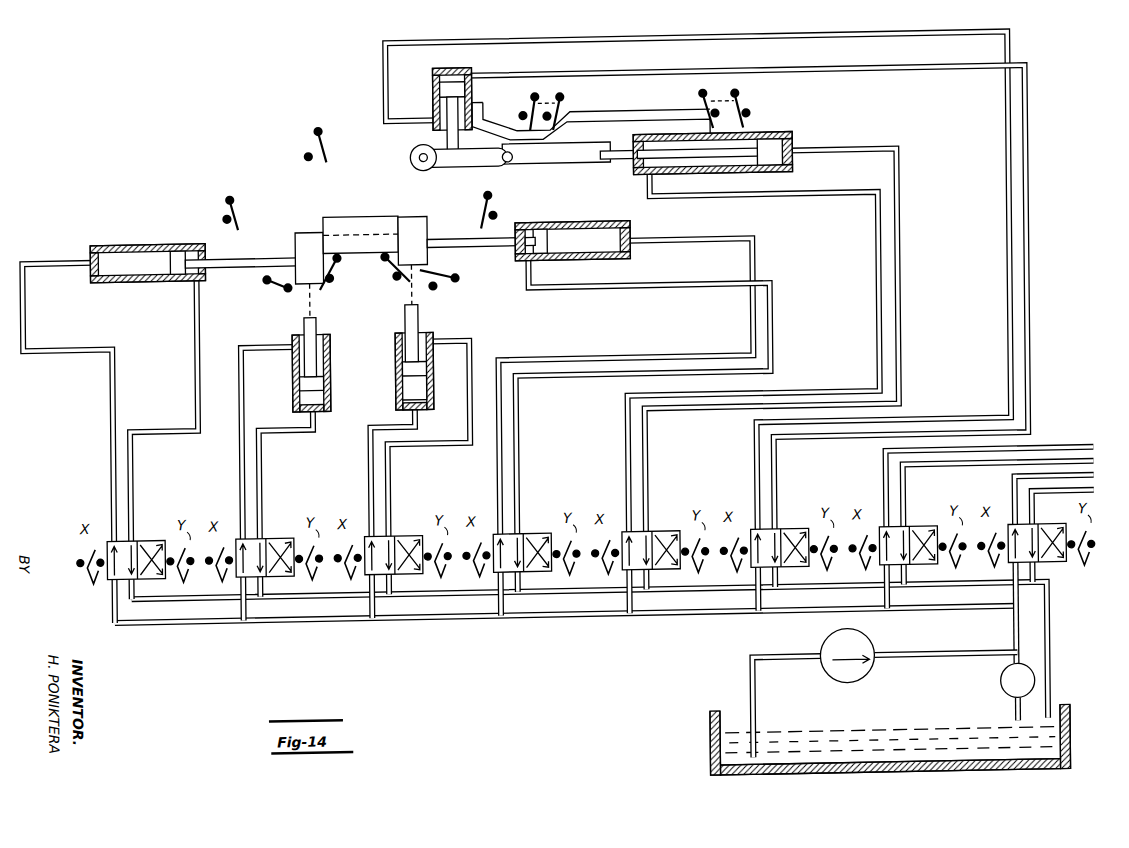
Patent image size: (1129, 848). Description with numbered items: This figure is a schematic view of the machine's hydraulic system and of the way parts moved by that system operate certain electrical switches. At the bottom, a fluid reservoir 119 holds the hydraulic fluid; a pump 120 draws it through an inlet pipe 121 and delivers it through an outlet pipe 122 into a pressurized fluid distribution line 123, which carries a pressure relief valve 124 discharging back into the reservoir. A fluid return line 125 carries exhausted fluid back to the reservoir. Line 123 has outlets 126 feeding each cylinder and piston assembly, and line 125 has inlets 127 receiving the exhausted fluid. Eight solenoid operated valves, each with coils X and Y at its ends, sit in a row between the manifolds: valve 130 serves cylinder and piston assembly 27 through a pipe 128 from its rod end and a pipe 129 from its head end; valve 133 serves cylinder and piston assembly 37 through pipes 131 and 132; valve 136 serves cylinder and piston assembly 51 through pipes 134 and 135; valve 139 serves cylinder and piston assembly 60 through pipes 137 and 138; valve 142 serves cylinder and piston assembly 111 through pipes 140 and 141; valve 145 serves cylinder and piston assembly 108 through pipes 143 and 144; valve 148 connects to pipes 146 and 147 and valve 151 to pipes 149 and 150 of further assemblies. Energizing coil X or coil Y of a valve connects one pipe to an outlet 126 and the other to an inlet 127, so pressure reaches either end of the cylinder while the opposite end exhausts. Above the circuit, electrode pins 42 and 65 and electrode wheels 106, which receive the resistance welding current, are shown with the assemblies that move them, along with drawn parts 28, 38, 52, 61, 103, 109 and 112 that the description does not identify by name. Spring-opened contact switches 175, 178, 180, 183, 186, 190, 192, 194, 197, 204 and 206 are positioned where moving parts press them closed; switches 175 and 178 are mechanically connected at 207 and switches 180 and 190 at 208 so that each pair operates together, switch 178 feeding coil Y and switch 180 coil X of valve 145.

The cylinder and piston assembly 27 is at (331, 361).
The piston rod 28 is at (304, 321).
The cylinder and piston assembly 37 is at (131, 237).
The piston rod 38 is at (248, 251).
The electrode pin 42 is at (344, 225).
The cylinder and piston assembly 51 is at (394, 375).
The piston rod 52 is at (421, 318).
The cylinder and piston assembly 60 is at (586, 223).
The piston rod 61 is at (464, 236).
The electrode pin 65 is at (388, 212).
The link 103 is at (486, 166).
The electrode wheels 106 is at (414, 161).
The cylinder and piston assembly 108 is at (445, 70).
The bracket 109 is at (448, 139).
The cylinder and piston assembly 111 is at (779, 137).
The piston rod 112 is at (617, 166).
The fluid reservoir 119 is at (708, 746).
The pump 120 is at (863, 648).
The inlet pipe 121 is at (748, 679).
The outlet pipe 122 is at (956, 656).
The pressurized fluid distribution line 123 is at (324, 622).
The pressure relief valve 124 is at (998, 694).
The fluid return line 125 is at (197, 588).
The outlets 126 is at (519, 593).
The inlets 127 is at (602, 577).
The pipe 128 is at (238, 445).
The pipe 129 is at (261, 440).
The valve 130 is at (262, 534).
The pipe 131 is at (181, 419).
The pipe 132 is at (76, 347).
The valve 133 is at (134, 535).
The pipe 134 is at (472, 346).
The pipe 135 is at (368, 469).
The valve 136 is at (390, 533).
The pipe 137 is at (722, 282).
The pipe 138 is at (715, 237).
The valve 139 is at (519, 532).
The pipe 140 is at (868, 195).
The pipe 141 is at (869, 150).
The valve 142 is at (647, 531).
The pipe 143 is at (865, 35).
The pipe 144 is at (865, 75).
The valve 145 is at (776, 531).
The pipe 146 is at (1009, 488).
The pipe 147 is at (1080, 455).
The valve 148 is at (905, 531).
The pipe 149 is at (1074, 505).
The pipe 150 is at (1065, 496).
The valve 151 is at (1034, 531).
The contact switch 175 is at (535, 98).
The contact switch 178 is at (562, 114).
The contact switch 180 is at (744, 112).
The contact switch 183 is at (386, 256).
The contact switch 186 is at (329, 142).
The contact switch 190 is at (708, 110).
The switch 192 is at (237, 205).
The contact switch 194 is at (425, 267).
The contact switch 197 is at (341, 269).
The contact switch 204 is at (484, 208).
The contact switch 206 is at (278, 285).
The mechanical connection 207 is at (544, 100).
The mechanical connection 208 is at (719, 102).